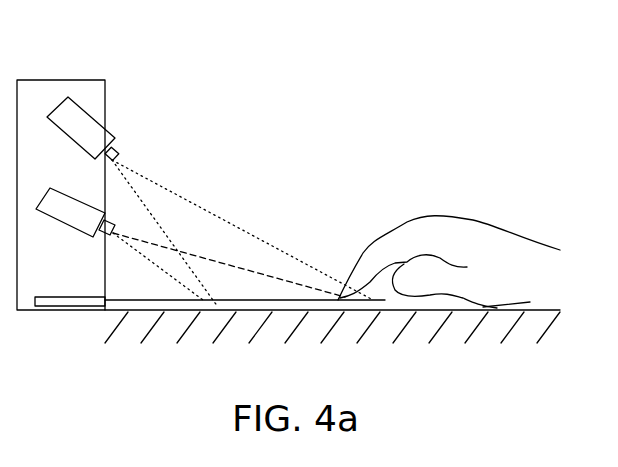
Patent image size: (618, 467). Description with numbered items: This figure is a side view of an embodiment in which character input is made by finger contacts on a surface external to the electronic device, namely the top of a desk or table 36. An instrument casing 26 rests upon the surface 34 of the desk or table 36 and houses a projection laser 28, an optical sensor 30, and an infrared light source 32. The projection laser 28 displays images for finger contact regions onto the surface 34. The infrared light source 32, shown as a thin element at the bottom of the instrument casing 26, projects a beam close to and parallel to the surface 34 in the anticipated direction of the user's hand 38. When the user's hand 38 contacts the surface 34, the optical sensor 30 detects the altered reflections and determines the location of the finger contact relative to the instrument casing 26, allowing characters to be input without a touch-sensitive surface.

The instrument casing 26 is at (63, 80).
The projection laser 28 is at (66, 136).
The optical sensor 30 is at (80, 201).
The infrared light source 32 is at (62, 296).
The surface 34 is at (247, 310).
The desk or table 36 is at (92, 322).
The user's hand 38 is at (517, 238).